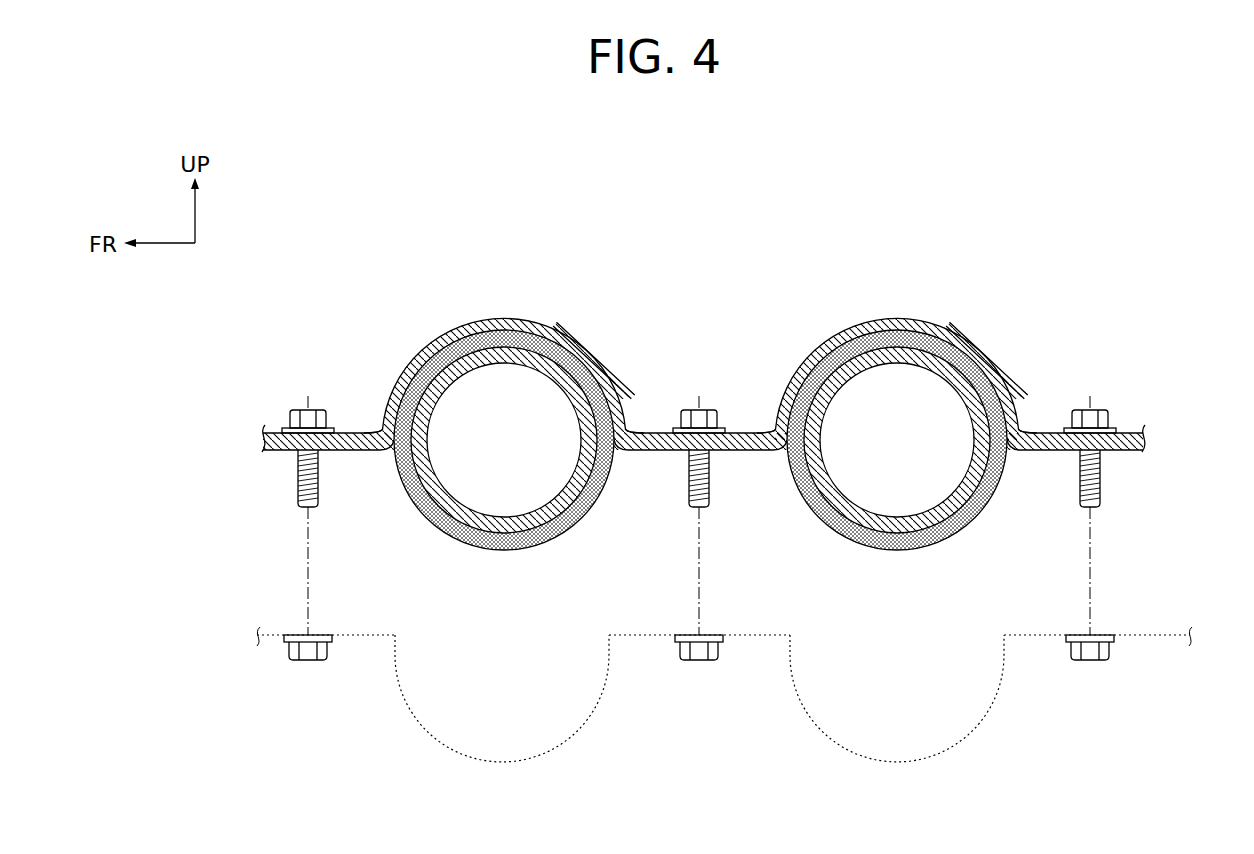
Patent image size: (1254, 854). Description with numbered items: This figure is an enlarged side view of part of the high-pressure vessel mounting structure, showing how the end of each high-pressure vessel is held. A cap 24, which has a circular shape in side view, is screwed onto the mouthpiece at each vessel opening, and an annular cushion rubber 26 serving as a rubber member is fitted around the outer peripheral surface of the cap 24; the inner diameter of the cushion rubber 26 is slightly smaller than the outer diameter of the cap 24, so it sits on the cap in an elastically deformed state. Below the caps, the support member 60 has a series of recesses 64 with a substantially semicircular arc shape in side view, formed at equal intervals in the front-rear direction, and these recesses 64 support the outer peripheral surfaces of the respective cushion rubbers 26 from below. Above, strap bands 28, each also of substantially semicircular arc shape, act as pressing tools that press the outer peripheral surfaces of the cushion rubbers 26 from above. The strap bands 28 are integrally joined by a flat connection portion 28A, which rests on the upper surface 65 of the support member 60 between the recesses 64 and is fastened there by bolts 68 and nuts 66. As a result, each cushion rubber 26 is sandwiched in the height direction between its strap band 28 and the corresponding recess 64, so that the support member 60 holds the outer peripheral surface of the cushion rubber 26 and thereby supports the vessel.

The cap 24 is at (440, 455).
The cushion rubber 26 is at (505, 554).
The strap band 28 is at (503, 314).
The connection portion 28A is at (353, 432).
The support member 60 is at (722, 682).
The recess 64 is at (527, 757).
The upper surface 65 is at (272, 634).
The nut 66 is at (308, 662).
The bolt 68 is at (306, 409).